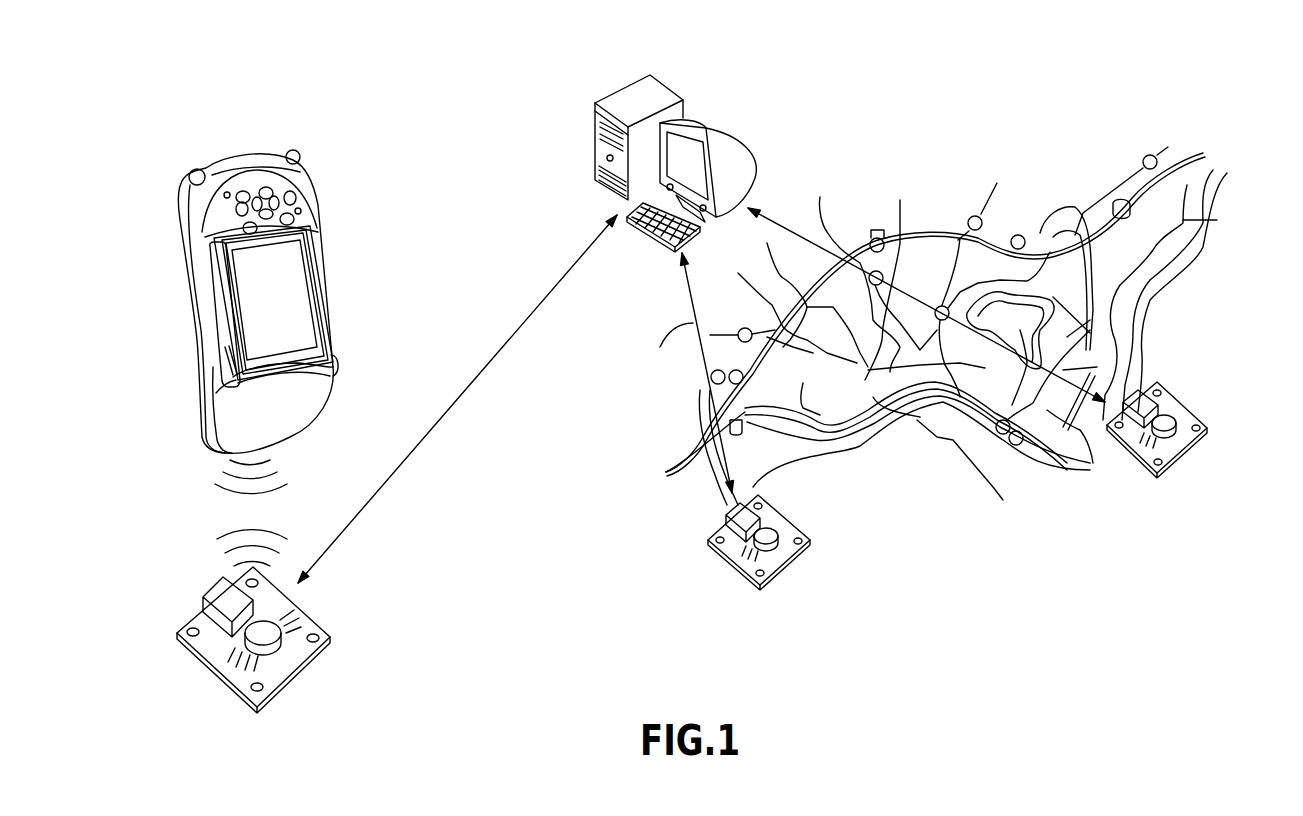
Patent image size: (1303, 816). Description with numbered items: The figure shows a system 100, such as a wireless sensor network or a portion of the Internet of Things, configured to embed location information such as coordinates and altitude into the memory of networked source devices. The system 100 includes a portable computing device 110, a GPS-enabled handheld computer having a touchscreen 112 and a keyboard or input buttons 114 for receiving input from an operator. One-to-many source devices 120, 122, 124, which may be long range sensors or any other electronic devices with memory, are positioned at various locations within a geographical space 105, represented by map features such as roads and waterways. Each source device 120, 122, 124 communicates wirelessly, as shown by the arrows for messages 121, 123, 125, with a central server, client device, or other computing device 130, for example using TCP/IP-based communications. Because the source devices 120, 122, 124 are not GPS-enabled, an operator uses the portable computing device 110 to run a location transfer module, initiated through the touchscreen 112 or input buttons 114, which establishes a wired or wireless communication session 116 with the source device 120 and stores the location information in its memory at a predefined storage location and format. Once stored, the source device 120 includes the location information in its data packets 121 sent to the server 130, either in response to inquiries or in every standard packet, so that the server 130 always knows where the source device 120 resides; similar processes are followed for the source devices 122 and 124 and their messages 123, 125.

The system 100 is at (452, 90).
The geographical space 105 is at (1195, 295).
The portable computing device 110 is at (175, 325).
The touchscreen 112 is at (308, 318).
The input buttons 114 is at (305, 196).
The communication session 116 is at (207, 503).
The source device 120 is at (310, 672).
The message 121 is at (432, 433).
The source device 122 is at (790, 563).
The message 123 is at (690, 318).
The source device 124 is at (1190, 450).
The message 125 is at (795, 228).
The central server 130 is at (718, 116).